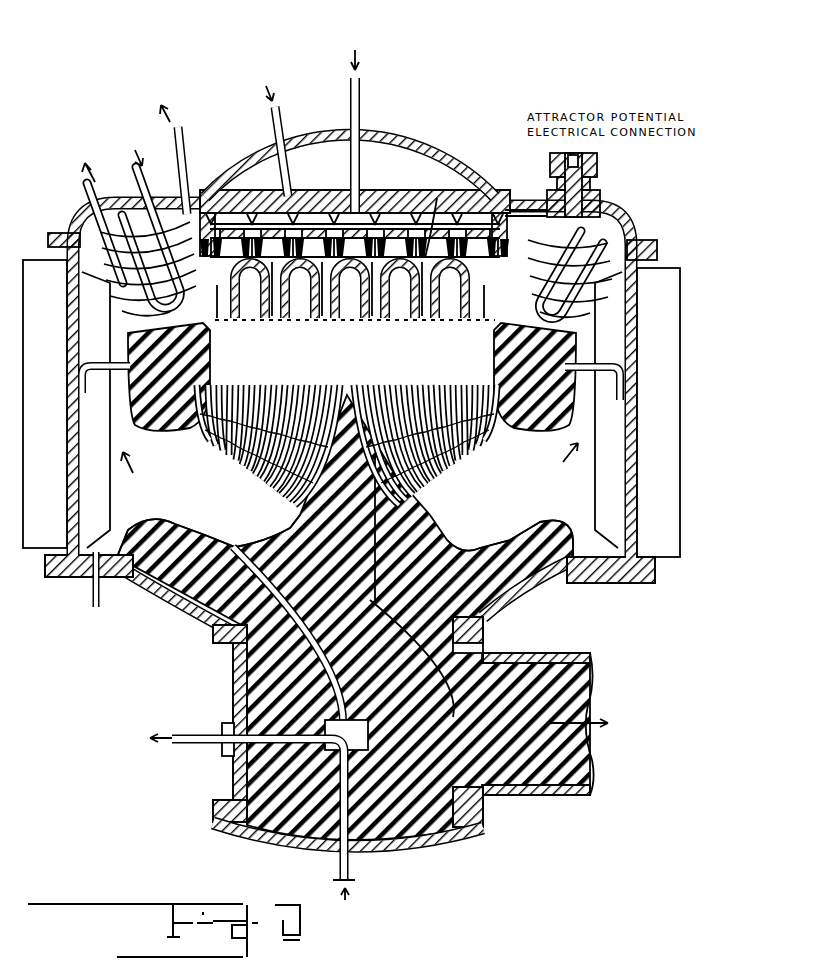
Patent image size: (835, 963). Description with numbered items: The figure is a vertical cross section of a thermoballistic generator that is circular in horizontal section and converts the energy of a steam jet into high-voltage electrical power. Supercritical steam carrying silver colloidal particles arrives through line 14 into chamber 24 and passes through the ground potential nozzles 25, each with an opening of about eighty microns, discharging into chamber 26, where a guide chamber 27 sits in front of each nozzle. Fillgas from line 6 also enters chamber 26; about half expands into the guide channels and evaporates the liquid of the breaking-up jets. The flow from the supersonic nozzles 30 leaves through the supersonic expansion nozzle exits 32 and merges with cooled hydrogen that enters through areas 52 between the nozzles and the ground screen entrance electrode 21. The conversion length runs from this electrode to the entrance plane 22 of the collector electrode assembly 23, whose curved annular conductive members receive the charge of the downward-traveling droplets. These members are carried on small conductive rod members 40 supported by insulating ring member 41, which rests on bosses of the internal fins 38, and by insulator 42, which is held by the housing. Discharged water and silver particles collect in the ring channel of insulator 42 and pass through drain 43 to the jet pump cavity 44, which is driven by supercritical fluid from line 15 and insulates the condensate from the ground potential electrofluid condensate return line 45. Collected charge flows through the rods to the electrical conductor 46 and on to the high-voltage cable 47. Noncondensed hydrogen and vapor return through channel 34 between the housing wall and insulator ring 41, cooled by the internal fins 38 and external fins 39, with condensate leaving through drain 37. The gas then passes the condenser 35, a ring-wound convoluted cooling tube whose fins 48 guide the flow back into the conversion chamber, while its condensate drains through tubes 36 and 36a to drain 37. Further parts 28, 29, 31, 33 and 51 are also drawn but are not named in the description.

The fillgas line 6 is at (362, 96).
The supercritical steam line 14 is at (290, 114).
The supercritical fluid bleed line 15 is at (352, 863).
The ground screen entrance electrode 21 is at (306, 322).
The entrance plane 22 is at (402, 370).
The collector electrode assembly 23 is at (456, 485).
The chamber 24 is at (407, 184).
The ground potential nozzles 25 is at (283, 196).
The chamber 26 is at (287, 233).
The guide chamber 27 is at (381, 236).
The nozzle electrodes 28 is at (277, 232).
The electrode lead 29 is at (434, 216).
The supersonic nozzles 30 is at (418, 312).
The electrode support plate 31 is at (343, 236).
The supersonic expansion nozzle exits 32 is at (371, 314).
The electrode tips line 33 is at (337, 348).
The return channel 34 is at (517, 487).
The condenser 35 is at (95, 235).
The drain tube 36 is at (612, 362).
The drain tube 36a is at (98, 352).
The drain 37 is at (92, 595).
The internal fins 38 is at (615, 482).
The external fins 39 is at (664, 482).
The conductive rod members 40 is at (257, 482).
The insulating ring member 41 is at (533, 430).
The insulator 42 is at (447, 542).
The drain 43 is at (292, 578).
The jet pump cavity 44 is at (369, 745).
The electrofluid condensate return line 45 is at (193, 745).
The electrical conductor 46 is at (382, 612).
The high-voltage cable 47 is at (558, 795).
The fins 48 is at (624, 268).
The vapor outlet tube 51 is at (190, 151).
The areas between supersonic nozzles 52 is at (315, 296).